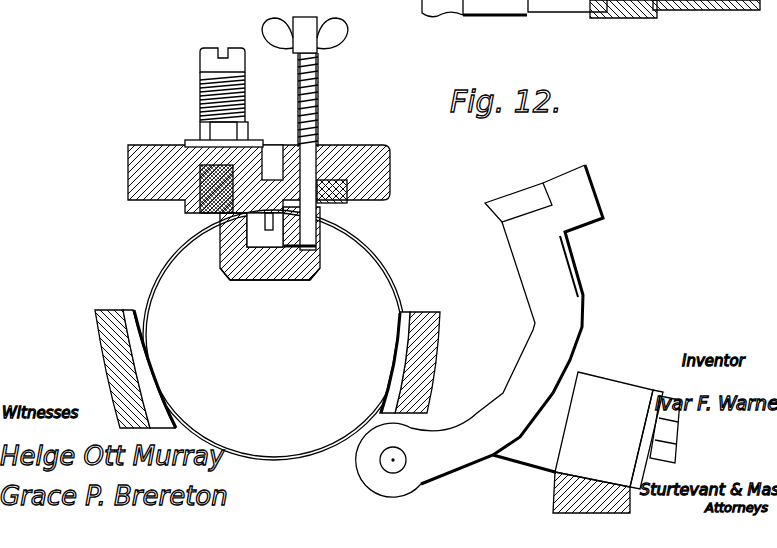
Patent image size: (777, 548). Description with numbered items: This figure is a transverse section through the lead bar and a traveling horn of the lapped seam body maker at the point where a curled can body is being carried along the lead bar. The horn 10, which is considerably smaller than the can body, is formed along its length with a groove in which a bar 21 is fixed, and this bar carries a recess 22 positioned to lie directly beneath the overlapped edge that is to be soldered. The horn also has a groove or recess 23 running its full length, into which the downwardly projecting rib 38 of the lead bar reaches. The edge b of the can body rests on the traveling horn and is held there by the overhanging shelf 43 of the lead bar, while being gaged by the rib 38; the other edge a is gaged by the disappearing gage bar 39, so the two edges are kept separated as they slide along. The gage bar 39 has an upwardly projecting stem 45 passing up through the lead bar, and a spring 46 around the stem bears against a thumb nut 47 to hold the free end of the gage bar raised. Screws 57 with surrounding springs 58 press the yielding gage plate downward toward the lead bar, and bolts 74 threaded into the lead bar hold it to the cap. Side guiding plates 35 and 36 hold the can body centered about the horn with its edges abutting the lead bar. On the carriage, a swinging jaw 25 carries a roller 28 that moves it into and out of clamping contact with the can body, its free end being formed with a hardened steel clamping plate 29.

The horn 10 is at (306, 272).
The bar 21 is at (250, 270).
The recess 22 is at (262, 228).
The groove or recess 23 is at (316, 252).
The swinging jaw 25 is at (565, 350).
The roller 28 is at (602, 388).
The hardened steel clamping plate 29 is at (505, 205).
The side guiding plate 35 is at (98, 356).
The side guiding plate 36 is at (420, 392).
The downwardly projecting rib 38 is at (350, 152).
The gage bar 39 is at (347, 188).
The overhanging shelf 43 is at (248, 178).
The upwardly projecting stem 45 is at (317, 155).
The spring 46 is at (319, 85).
The thumb nut 47 is at (337, 33).
The screw 57 is at (205, 62).
The spring 58 is at (205, 82).
The bolt 74 is at (200, 135).
The edge of the can body a is at (392, 163).
The edge of the can body b is at (283, 280).